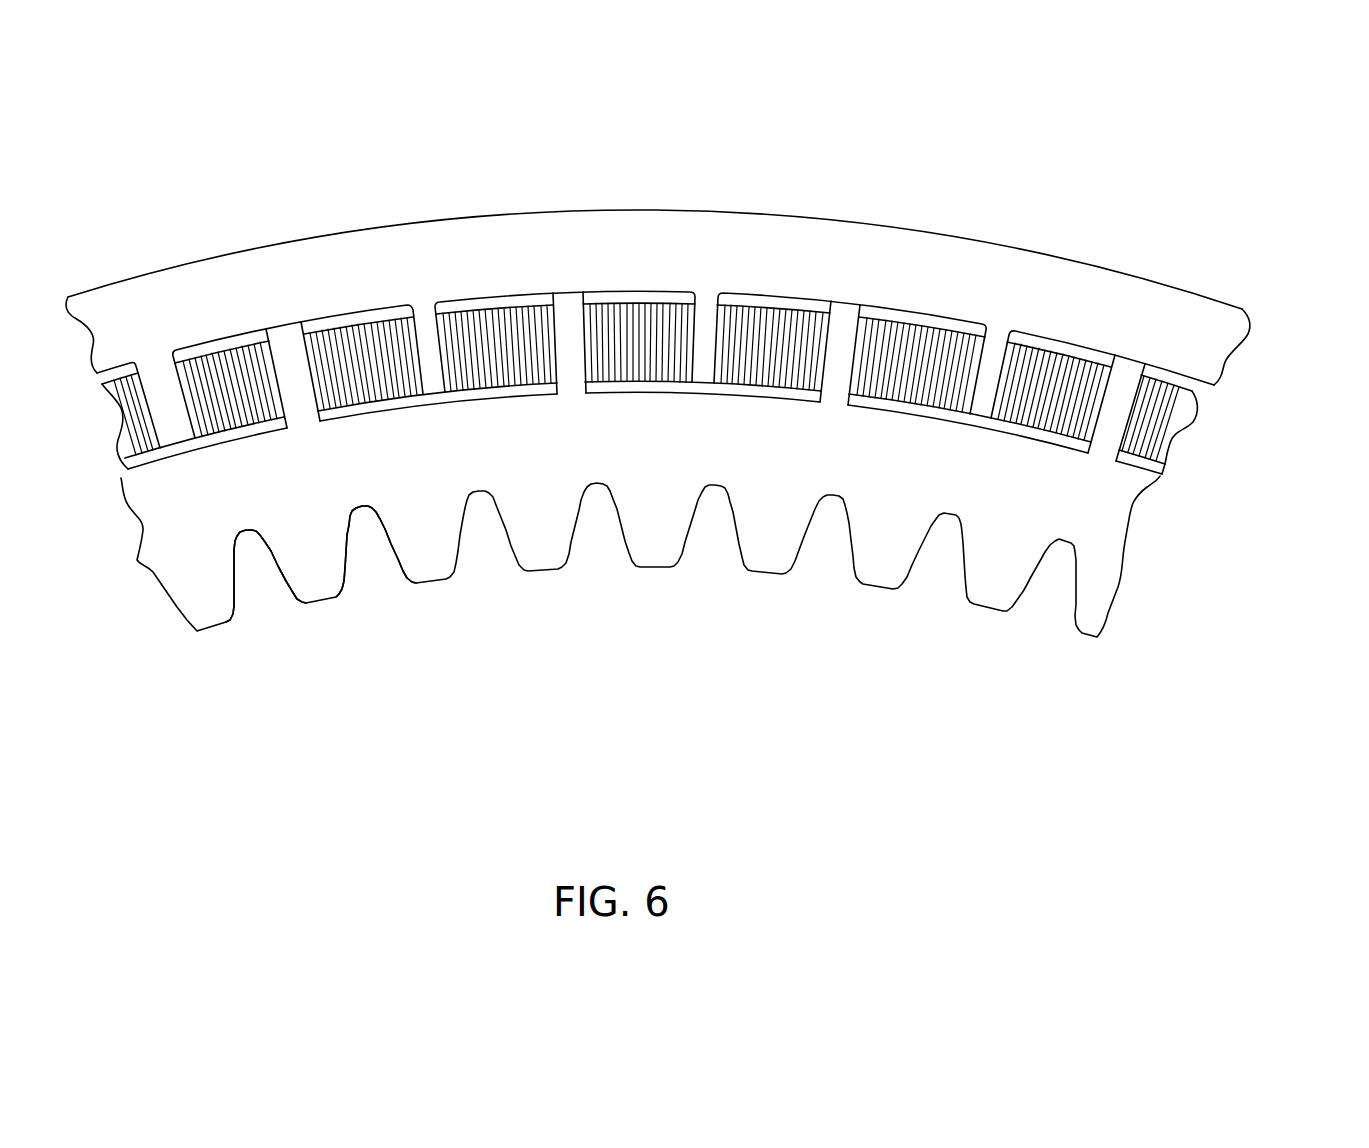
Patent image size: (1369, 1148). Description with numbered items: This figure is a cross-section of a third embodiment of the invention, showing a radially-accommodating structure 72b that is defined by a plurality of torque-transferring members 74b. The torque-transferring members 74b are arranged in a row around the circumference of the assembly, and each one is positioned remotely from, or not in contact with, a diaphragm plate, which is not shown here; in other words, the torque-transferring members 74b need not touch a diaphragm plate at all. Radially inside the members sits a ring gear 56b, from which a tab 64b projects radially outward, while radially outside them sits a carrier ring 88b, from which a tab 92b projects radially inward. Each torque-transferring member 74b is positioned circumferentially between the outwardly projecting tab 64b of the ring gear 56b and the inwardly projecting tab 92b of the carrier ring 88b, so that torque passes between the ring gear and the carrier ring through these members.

The ring gear 56b is at (143, 583).
The tab 64b is at (297, 400).
The radially-accommodating structure 72b is at (713, 284).
The torque-transferring members 74b is at (228, 383).
The carrier ring 88b is at (896, 248).
The tab 92b is at (703, 308).